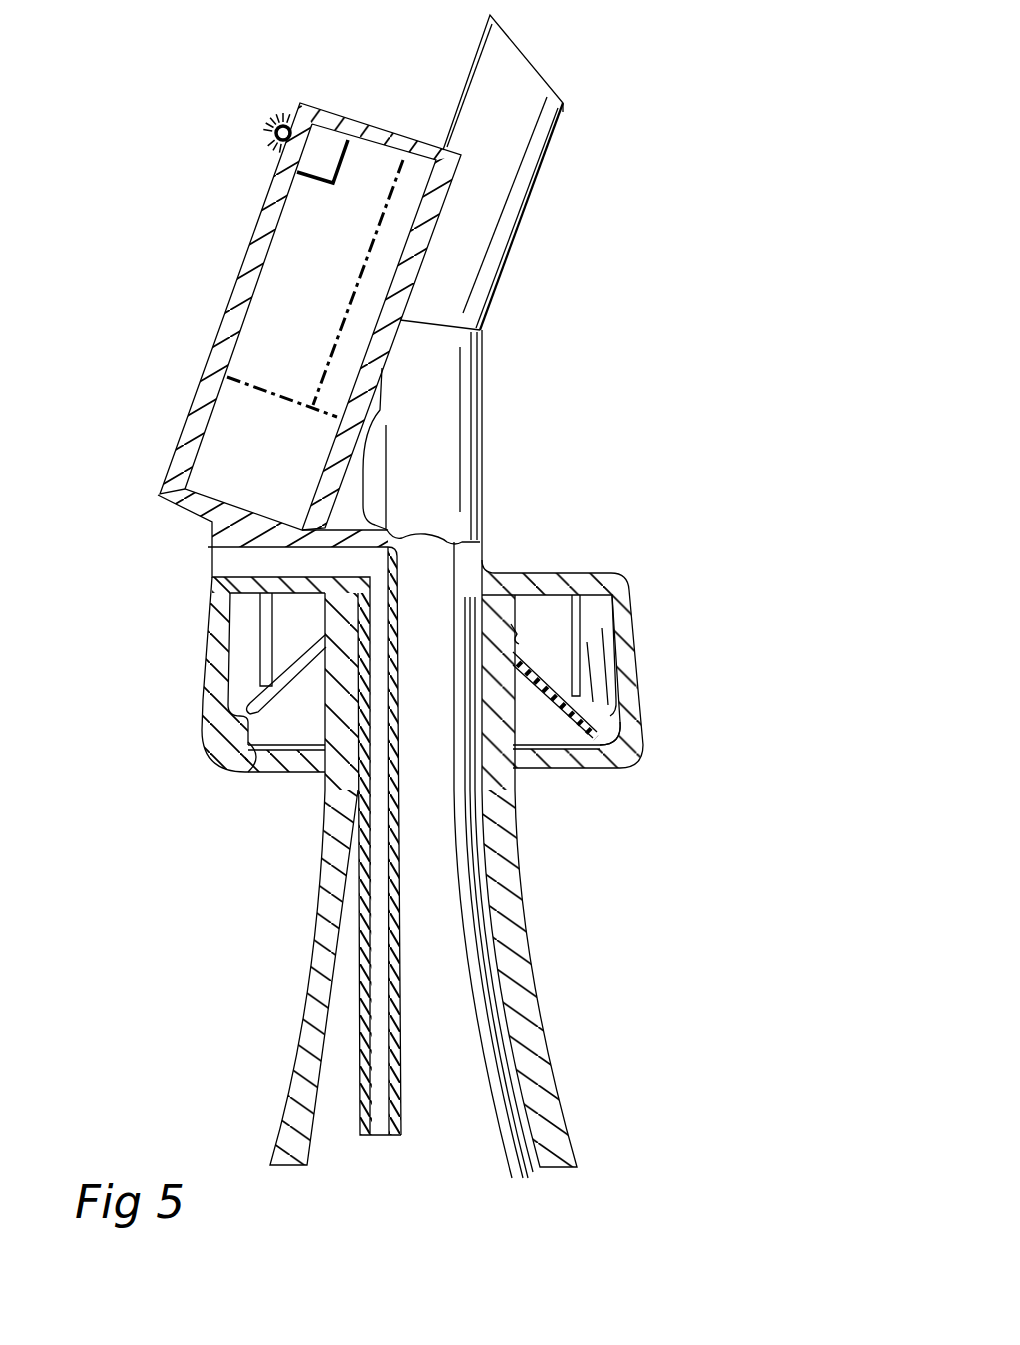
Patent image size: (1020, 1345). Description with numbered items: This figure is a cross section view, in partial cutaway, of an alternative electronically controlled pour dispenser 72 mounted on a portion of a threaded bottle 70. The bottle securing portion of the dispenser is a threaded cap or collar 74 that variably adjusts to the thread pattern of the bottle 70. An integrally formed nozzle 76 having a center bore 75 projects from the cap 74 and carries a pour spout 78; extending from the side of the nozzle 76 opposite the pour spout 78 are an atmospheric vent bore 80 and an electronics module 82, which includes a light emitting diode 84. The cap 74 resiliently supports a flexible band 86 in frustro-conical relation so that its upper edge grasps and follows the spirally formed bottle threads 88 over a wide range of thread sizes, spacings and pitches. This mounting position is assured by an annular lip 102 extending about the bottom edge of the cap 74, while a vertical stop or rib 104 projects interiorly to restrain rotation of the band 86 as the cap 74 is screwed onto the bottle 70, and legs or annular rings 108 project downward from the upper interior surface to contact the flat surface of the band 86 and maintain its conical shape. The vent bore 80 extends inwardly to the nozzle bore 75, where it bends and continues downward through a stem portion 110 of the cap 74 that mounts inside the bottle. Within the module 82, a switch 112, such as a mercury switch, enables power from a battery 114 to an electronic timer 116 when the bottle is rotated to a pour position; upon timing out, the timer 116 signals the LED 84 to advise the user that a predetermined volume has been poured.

The threaded bottle 70 is at (520, 853).
The electronically controlled pour dispenser 72 is at (757, 521).
The threaded cap or collar 74 is at (645, 672).
The center bore 75 is at (443, 572).
The nozzle 76 is at (503, 305).
The pour spout 78 is at (530, 62).
The atmospheric vent bore 80 is at (212, 563).
The electronics module 82 is at (195, 373).
The light emitting diode (LED) 84 is at (260, 133).
The flexible band 86 is at (266, 714).
The bottle threads 88 is at (520, 647).
The annular lip 102 is at (636, 731).
The vertical stop or rib 104 is at (252, 760).
The legs or annular rings 108 is at (259, 622).
The stem portion 110 is at (400, 1074).
The switch 112 is at (410, 190).
The battery 114 is at (285, 468).
The electronic timer 116 is at (333, 287).